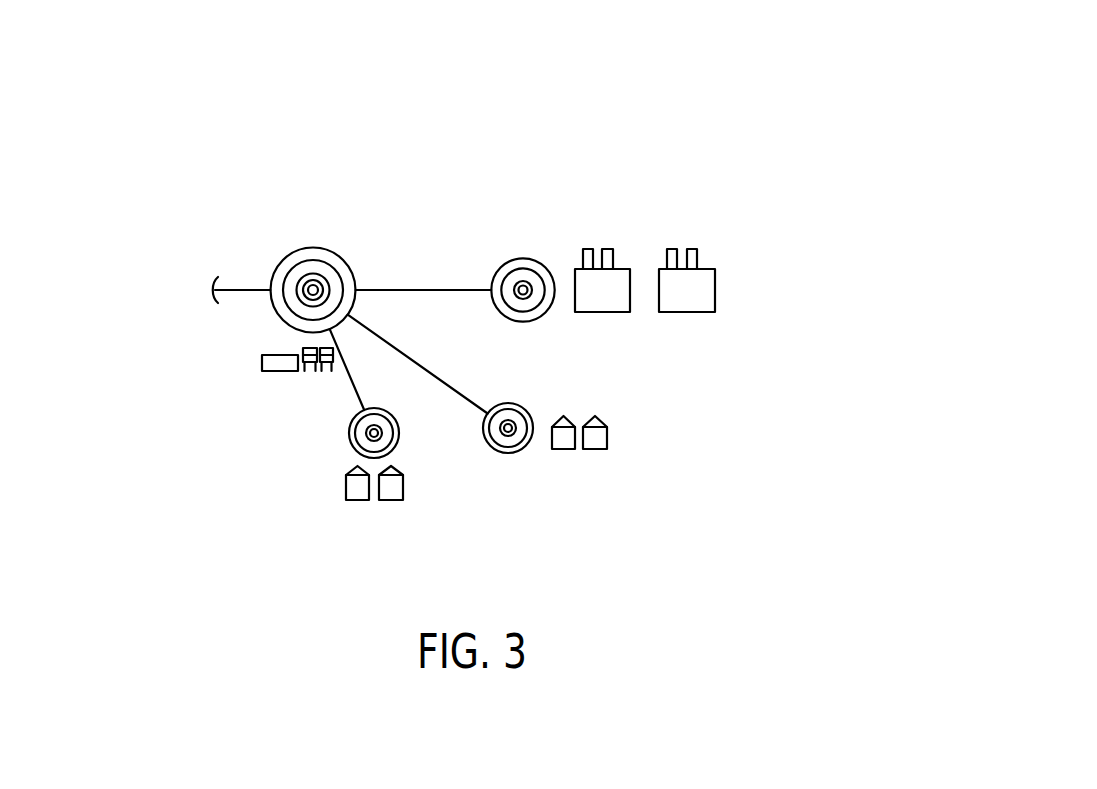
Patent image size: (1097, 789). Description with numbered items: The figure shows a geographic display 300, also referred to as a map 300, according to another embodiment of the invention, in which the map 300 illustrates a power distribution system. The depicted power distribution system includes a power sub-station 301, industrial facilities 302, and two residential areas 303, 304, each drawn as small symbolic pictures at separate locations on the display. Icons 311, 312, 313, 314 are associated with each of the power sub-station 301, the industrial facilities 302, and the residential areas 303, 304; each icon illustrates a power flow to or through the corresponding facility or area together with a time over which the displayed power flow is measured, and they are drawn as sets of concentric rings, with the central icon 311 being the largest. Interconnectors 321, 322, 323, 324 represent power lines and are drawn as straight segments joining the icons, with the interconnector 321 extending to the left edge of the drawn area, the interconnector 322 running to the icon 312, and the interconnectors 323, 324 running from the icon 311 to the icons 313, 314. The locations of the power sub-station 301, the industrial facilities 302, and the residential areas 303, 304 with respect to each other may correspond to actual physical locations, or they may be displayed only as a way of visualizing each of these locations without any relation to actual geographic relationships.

The geographic display 300 is at (731, 72).
The power sub-station 301 is at (268, 384).
The industrial facilities 302 is at (665, 218).
The residential area 303 is at (586, 472).
The residential area 304 is at (356, 525).
The icon 311 is at (318, 248).
The icon 312 is at (524, 258).
The icon 313 is at (517, 403).
The icon 314 is at (399, 428).
The interconnector 321 is at (240, 290).
The interconnector 322 is at (405, 290).
The interconnector 323 is at (422, 364).
The interconnector 324 is at (354, 389).